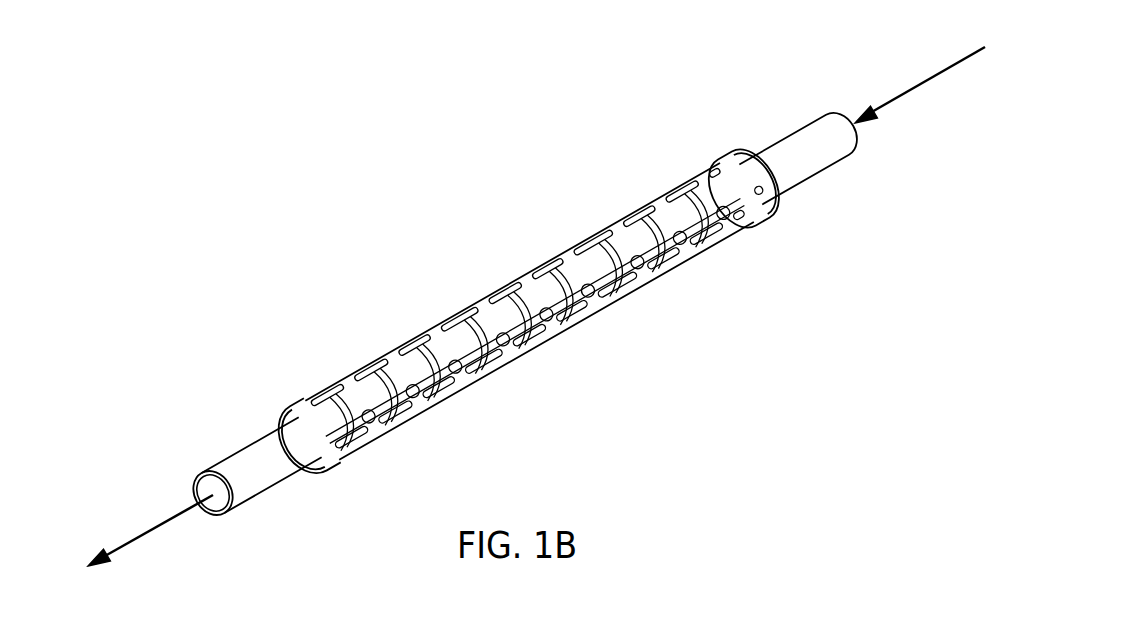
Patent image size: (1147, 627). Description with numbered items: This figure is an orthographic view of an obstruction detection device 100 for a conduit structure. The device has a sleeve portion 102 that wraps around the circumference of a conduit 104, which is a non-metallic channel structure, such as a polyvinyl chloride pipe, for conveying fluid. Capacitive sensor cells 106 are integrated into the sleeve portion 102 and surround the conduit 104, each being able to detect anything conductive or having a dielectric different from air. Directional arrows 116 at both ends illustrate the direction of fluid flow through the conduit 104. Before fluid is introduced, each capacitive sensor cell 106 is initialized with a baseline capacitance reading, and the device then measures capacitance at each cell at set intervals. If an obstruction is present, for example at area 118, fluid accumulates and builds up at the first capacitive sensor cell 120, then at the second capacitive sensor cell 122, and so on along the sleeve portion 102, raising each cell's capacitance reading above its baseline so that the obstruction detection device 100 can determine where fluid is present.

The obstruction detection device 100 is at (367, 245).
The sleeve portion 102 is at (690, 180).
The conduit 104 is at (237, 452).
The capacitive sensor cells 106 is at (593, 240).
The directional arrows 116 is at (938, 74).
The area 118 is at (215, 500).
The first capacitive sensor cell 120 is at (377, 427).
The second capacitive sensor cell 122 is at (425, 402).